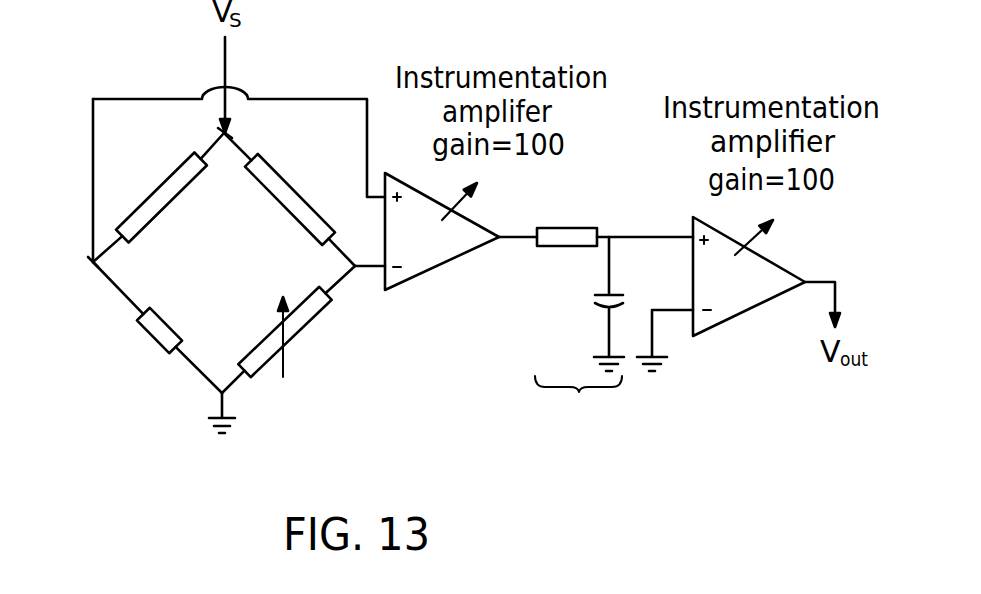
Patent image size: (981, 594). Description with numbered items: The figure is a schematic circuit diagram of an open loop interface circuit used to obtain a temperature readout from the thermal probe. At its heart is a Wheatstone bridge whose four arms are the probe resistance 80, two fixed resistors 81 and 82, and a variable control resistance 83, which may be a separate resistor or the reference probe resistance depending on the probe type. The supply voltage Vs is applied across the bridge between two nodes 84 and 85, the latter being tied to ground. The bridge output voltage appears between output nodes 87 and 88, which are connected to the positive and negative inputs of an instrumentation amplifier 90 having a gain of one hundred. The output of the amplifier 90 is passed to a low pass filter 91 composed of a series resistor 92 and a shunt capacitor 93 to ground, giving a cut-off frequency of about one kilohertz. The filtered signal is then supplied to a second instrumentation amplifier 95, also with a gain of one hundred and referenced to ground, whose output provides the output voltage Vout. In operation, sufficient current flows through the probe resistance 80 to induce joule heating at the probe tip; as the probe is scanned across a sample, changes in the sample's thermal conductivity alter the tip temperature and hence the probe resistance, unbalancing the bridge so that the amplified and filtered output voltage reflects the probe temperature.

The probe resistance 80 is at (145, 338).
The fixed resistor 81 is at (172, 204).
The fixed resistor 82 is at (278, 207).
The variable control resistance 83 is at (313, 318).
The node 84 is at (229, 134).
The node 85 is at (217, 396).
The output node 87 is at (90, 263).
The output node 88 is at (355, 262).
The instrumentation amplifier 90 is at (449, 252).
The low pass filter 91 is at (537, 331).
The resistor 92 is at (588, 227).
The capacitor 93 is at (612, 297).
The second instrumentation amplifier 95 is at (781, 266).